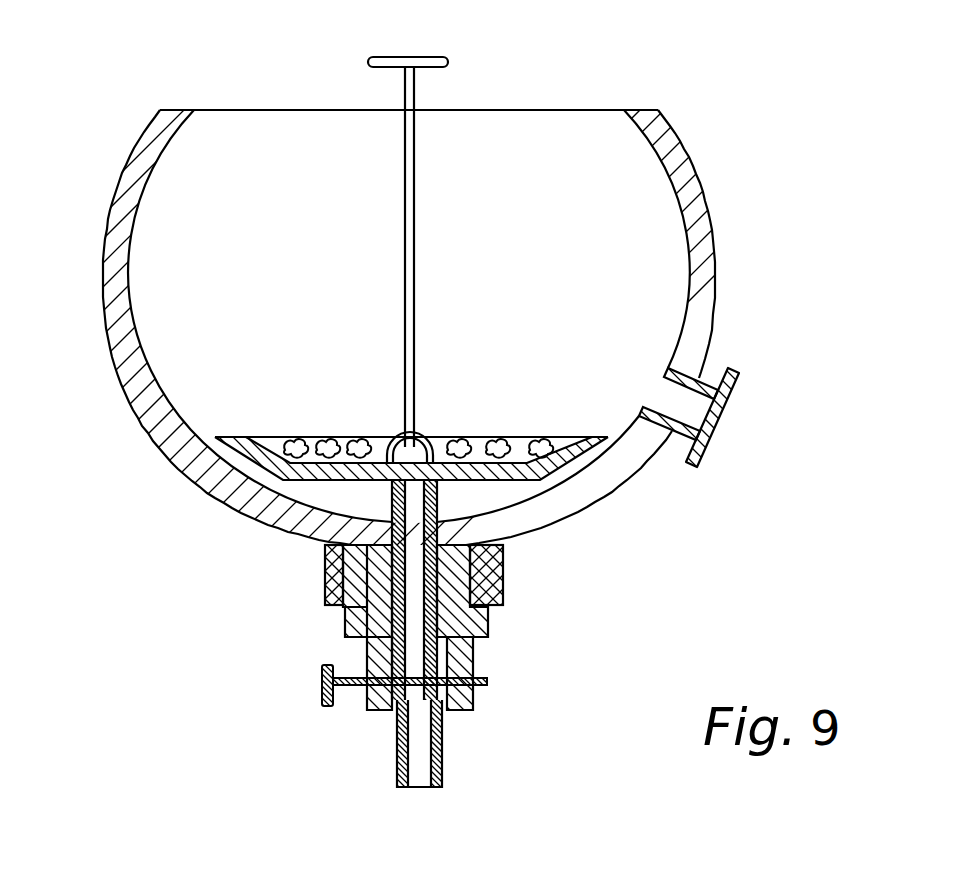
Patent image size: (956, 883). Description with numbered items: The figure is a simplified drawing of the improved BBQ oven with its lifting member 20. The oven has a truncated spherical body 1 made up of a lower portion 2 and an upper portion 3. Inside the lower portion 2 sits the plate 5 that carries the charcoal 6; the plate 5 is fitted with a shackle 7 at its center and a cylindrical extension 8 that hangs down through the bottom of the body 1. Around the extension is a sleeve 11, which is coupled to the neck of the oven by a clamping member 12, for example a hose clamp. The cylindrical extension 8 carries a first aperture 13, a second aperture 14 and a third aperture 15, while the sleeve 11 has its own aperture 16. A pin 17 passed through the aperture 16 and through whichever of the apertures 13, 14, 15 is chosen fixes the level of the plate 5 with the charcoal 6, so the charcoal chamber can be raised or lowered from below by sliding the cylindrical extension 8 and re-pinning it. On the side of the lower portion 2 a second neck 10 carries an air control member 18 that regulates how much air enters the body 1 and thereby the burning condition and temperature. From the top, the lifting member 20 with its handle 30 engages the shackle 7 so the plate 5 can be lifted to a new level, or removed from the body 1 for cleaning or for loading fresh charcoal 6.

The truncated spherical body 1 is at (522, 117).
The lower portion 2 is at (177, 462).
The upper portion 3 is at (478, 292).
The plate 5 is at (272, 440).
The charcoal 6 is at (300, 437).
The shackle 7 is at (428, 437).
The cylindrical extension 8 is at (438, 490).
The second neck 10 is at (710, 367).
The sleeve 11 is at (488, 615).
The clamping member 12 is at (500, 573).
The first aperture 13 is at (420, 702).
The second aperture 14 is at (398, 728).
The third aperture 15 is at (443, 760).
The aperture 16 is at (488, 683).
The pin 17 is at (342, 688).
The air control member 18 is at (693, 460).
The lifting member 20 is at (430, 262).
The handle 30 is at (437, 56).